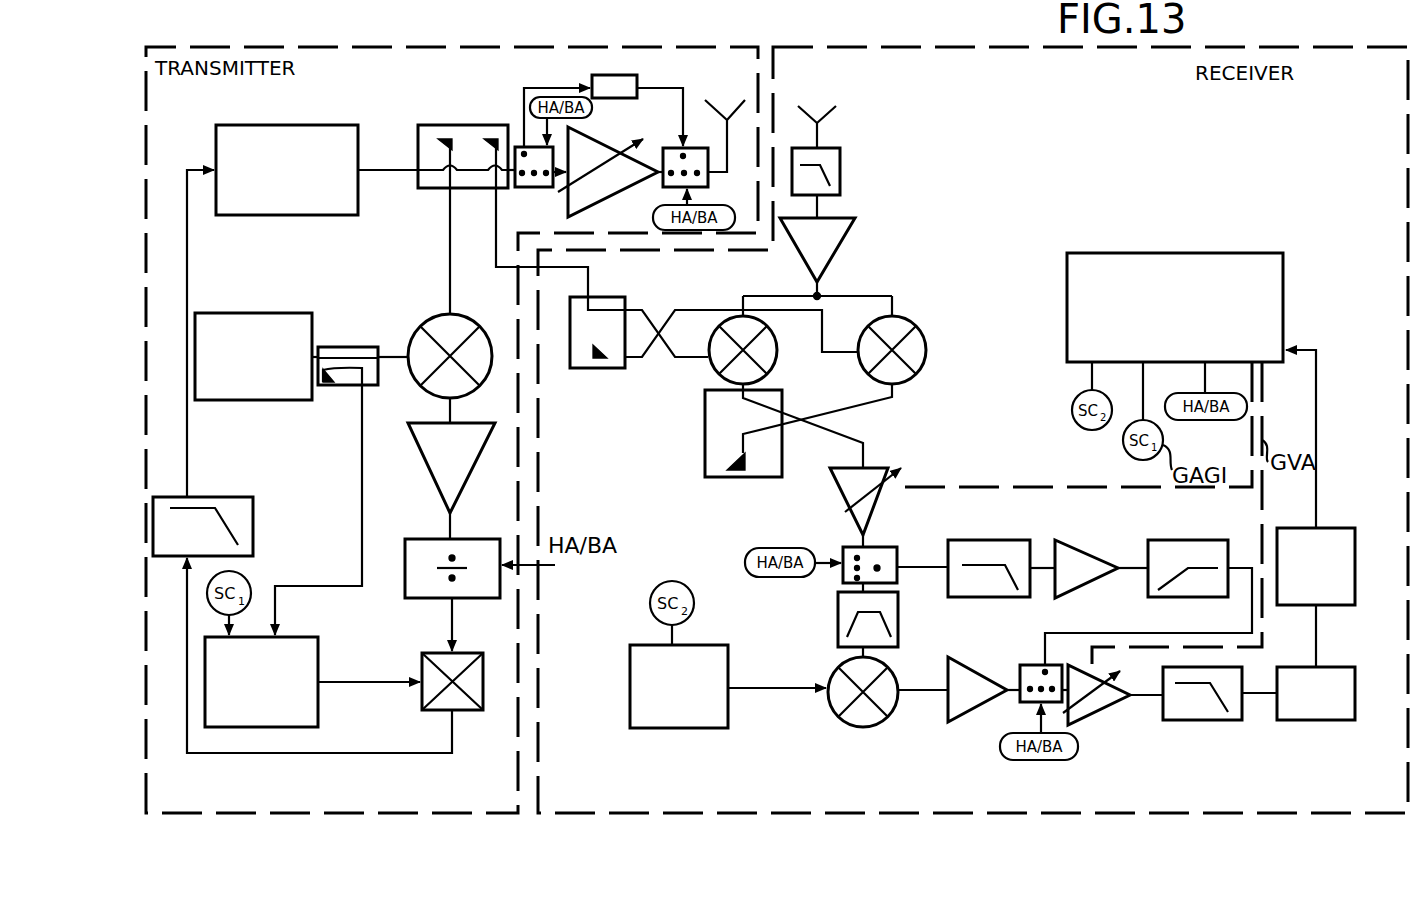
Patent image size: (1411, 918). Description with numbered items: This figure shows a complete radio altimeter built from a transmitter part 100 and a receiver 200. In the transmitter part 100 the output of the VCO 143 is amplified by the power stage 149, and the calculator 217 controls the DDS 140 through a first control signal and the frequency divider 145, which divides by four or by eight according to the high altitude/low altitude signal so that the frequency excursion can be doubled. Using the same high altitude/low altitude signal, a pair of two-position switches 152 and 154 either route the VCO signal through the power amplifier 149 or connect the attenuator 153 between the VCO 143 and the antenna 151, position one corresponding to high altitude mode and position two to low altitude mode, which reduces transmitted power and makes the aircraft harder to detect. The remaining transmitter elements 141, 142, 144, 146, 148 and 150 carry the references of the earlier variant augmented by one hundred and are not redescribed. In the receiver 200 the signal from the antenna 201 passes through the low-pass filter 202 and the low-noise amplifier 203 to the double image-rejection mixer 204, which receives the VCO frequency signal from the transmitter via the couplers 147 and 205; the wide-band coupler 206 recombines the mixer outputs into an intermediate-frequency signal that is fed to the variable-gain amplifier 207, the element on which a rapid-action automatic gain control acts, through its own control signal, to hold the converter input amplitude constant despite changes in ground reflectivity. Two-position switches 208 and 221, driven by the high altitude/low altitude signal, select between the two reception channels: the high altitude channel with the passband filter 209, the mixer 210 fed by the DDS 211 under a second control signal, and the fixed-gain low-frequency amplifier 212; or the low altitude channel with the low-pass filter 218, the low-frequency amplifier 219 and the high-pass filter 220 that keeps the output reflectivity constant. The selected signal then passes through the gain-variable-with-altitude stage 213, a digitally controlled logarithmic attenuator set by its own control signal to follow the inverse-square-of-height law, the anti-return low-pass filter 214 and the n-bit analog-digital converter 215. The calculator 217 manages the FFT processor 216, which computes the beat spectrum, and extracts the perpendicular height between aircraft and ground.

The transmitter part 100 is at (388, 815).
The receiver 200 is at (1240, 815).
The DDS 140 is at (320, 637).
The mixer 141 is at (478, 653).
The mixer 142 is at (425, 320).
The VCO 143 is at (258, 125).
The amplifier 144 is at (483, 455).
The frequency divider 145 is at (483, 539).
The oscillator 146 is at (250, 313).
The coupler 147 is at (449, 125).
The phase shifter 148 is at (350, 347).
The power stage 149 is at (598, 130).
The low-pass filter 150 is at (237, 497).
The antenna 151 is at (707, 107).
The two-position switch 152 is at (538, 187).
The attenuator 153 is at (610, 75).
The two-position switch 154 is at (710, 180).
The antenna 201 is at (830, 116).
The low-pass filter 202 is at (840, 162).
The low-noise amplifier 203 is at (855, 228).
The double IRM mixer 204 is at (858, 365).
The coupler 205 is at (610, 368).
The wide-band coupler 206 is at (705, 440).
The variable-gain amplifier 207 is at (880, 518).
The two-position switch 208 is at (890, 547).
The passband filter 209 is at (898, 618).
The mixer 210 is at (865, 727).
The DDS 211 is at (680, 728).
The low frequency fixed-gain amplifier 212 is at (958, 722).
The GVA stage 213 is at (1102, 706).
The anti-return low-pass filter 214 is at (1210, 720).
The n-bit analog-digital converter 215 is at (1327, 720).
The FFT processor 216 is at (1355, 580).
The calculator 217 is at (1285, 300).
The low-pass filter 218 is at (1003, 540).
The low-frequency amplifier 219 is at (1085, 540).
The high-pass filter 220 is at (1170, 540).
The two-position switch 221 is at (1020, 700).